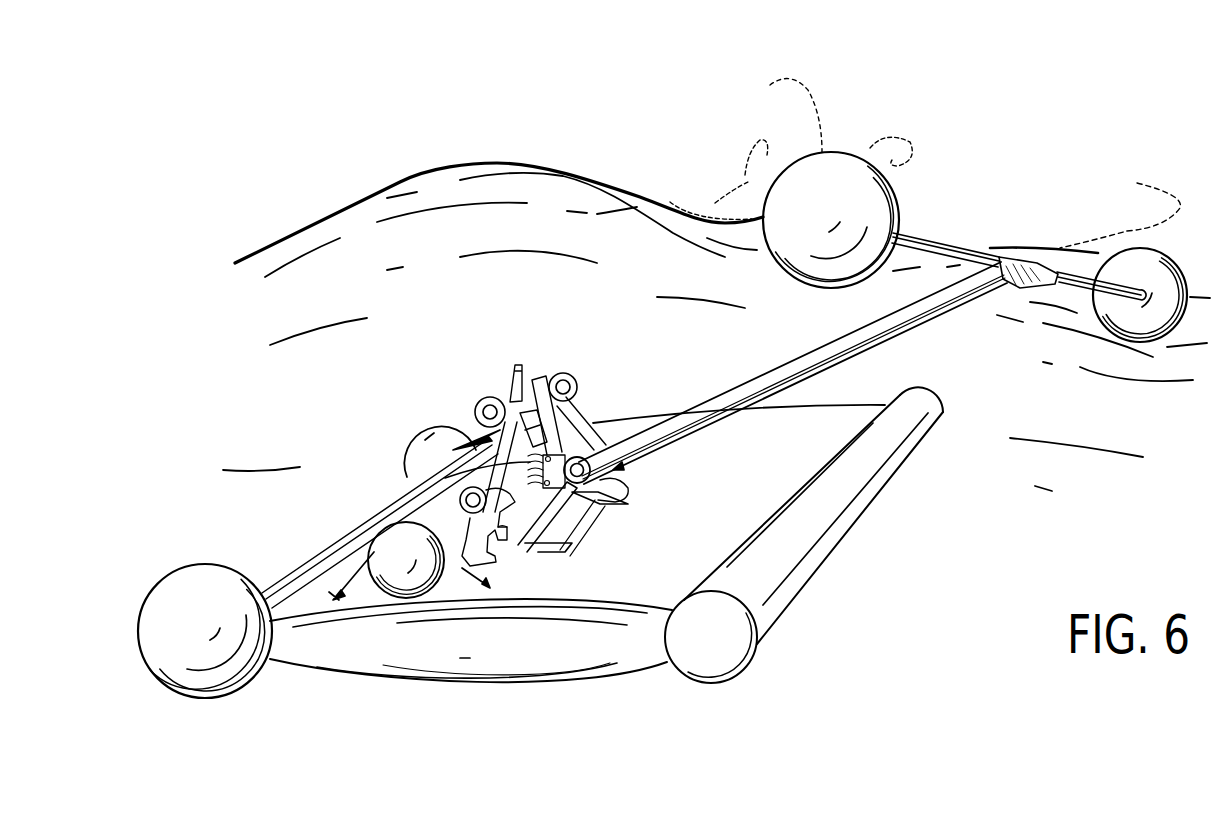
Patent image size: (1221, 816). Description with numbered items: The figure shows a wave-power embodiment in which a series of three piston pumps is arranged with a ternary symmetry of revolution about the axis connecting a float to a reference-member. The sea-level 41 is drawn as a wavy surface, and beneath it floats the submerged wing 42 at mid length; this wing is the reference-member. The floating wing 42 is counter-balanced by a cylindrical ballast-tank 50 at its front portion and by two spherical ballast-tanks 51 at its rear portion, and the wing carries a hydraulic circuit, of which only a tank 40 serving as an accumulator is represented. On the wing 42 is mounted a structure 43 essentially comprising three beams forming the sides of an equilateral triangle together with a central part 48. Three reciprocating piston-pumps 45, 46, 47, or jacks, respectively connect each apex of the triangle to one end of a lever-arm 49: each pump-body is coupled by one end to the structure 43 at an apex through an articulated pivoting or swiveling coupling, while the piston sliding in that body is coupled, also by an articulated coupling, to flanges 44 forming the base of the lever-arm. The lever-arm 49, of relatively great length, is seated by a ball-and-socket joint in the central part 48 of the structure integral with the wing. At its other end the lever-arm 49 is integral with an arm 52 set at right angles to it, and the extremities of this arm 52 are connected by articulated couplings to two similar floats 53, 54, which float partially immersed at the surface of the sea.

The tank 40 is at (387, 552).
The sea-level 41 is at (410, 178).
The submerged wing 42 is at (793, 474).
The structure 43 is at (582, 521).
The flanges 44 is at (410, 484).
The reciprocating piston-pump 45 is at (520, 497).
The reciprocating piston-pump 46 is at (510, 406).
The reciprocating piston-pump 47 is at (589, 499).
The central part 48 is at (590, 450).
The lever-arm 49 is at (768, 383).
The cylindrical ballast-tank 50 is at (777, 597).
The spherical ballast-tank 51 is at (193, 592).
The arm 52 is at (928, 240).
The float 53 is at (795, 188).
The float 54 is at (1140, 273).